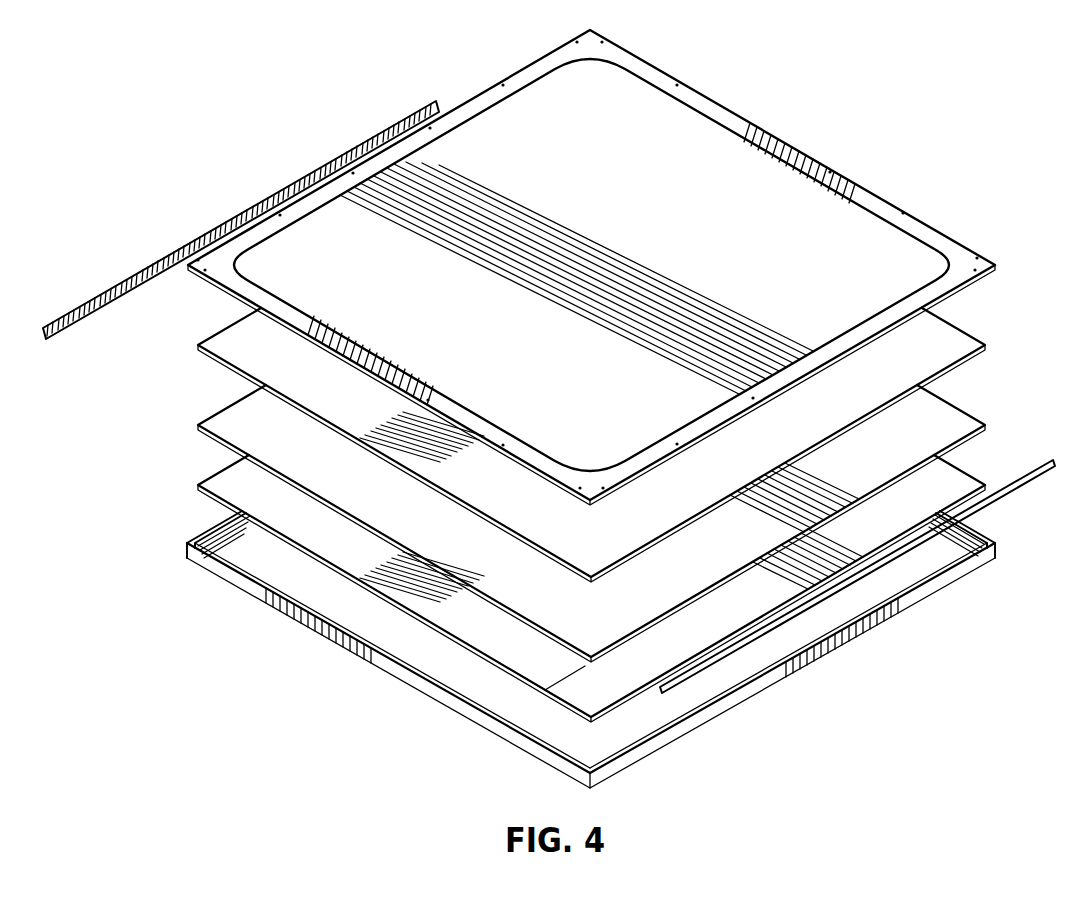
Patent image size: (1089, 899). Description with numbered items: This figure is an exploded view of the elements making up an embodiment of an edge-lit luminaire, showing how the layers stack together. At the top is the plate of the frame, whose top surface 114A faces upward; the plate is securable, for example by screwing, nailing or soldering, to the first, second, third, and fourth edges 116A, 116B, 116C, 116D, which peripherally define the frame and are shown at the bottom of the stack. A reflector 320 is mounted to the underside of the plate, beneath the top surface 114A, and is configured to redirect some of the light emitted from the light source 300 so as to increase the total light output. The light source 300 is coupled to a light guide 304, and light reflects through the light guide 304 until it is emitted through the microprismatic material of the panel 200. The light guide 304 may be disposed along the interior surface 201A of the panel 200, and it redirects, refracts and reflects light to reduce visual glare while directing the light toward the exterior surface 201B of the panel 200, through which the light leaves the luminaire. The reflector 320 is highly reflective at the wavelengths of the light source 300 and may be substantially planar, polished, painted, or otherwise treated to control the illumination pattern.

The top surface 114A is at (632, 188).
The light source 300 is at (213, 233).
The reflector 320 is at (958, 345).
The light guide 304 is at (958, 427).
The panel 200 is at (958, 483).
The first edge 116A is at (203, 530).
The second edge 116B is at (765, 680).
The third edge 116C is at (385, 662).
The fourth edge 116D is at (980, 522).
The interior surface 201A is at (566, 673).
The exterior surface 201B is at (538, 690).